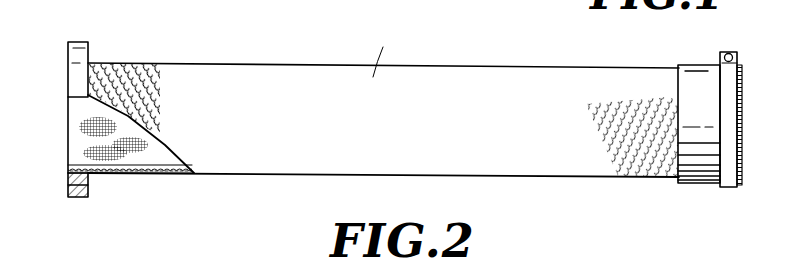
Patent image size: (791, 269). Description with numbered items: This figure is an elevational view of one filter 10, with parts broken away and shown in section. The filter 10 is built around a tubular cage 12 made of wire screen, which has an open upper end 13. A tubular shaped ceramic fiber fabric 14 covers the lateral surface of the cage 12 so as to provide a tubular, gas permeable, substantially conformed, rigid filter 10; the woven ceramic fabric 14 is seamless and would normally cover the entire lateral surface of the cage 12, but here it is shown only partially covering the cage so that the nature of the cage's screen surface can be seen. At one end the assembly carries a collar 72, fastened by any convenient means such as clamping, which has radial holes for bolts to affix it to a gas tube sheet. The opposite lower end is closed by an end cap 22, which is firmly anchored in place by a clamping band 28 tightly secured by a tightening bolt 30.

The filter 10 is at (309, 63).
The tubular cage 12 is at (128, 153).
The open upper end 13 is at (68, 128).
The ceramic fiber fabric 14 is at (387, 48).
The end cap 22 is at (698, 179).
The clamping band 28 is at (727, 181).
The tightening bolt 30 is at (733, 51).
The collar 72 is at (75, 42).